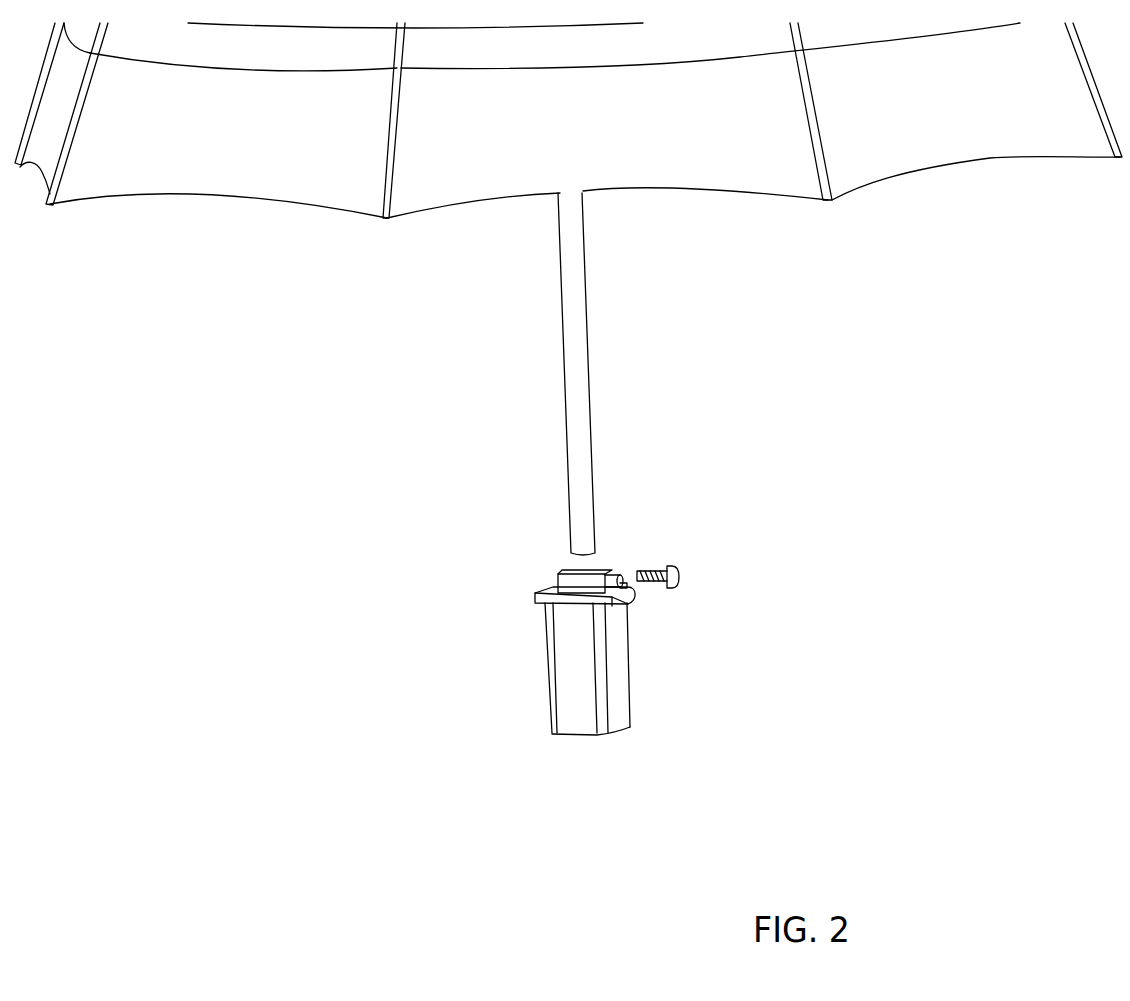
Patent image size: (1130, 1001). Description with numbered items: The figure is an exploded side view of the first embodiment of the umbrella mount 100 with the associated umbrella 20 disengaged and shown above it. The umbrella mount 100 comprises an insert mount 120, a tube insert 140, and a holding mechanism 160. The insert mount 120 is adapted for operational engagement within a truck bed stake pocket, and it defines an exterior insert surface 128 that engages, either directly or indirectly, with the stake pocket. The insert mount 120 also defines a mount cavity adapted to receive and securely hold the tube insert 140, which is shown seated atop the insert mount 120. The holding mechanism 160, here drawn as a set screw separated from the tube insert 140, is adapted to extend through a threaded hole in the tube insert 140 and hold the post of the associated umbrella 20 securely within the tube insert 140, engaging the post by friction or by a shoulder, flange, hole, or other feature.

The umbrella 20 is at (703, 242).
The umbrella mount 100 is at (684, 617).
The insert mount 120 is at (593, 669).
The exterior insert surface 128 is at (620, 662).
The tube insert 140 is at (568, 572).
The holding mechanism 160 is at (683, 570).